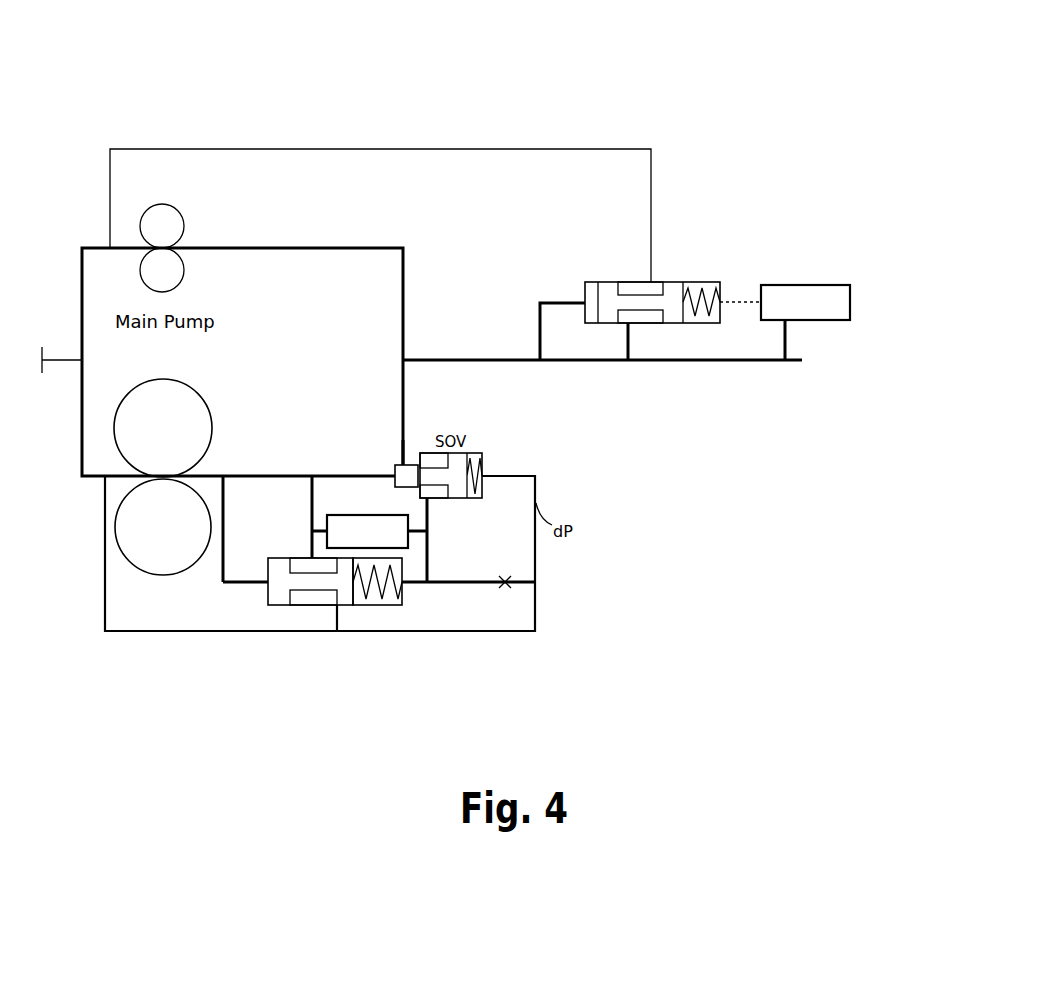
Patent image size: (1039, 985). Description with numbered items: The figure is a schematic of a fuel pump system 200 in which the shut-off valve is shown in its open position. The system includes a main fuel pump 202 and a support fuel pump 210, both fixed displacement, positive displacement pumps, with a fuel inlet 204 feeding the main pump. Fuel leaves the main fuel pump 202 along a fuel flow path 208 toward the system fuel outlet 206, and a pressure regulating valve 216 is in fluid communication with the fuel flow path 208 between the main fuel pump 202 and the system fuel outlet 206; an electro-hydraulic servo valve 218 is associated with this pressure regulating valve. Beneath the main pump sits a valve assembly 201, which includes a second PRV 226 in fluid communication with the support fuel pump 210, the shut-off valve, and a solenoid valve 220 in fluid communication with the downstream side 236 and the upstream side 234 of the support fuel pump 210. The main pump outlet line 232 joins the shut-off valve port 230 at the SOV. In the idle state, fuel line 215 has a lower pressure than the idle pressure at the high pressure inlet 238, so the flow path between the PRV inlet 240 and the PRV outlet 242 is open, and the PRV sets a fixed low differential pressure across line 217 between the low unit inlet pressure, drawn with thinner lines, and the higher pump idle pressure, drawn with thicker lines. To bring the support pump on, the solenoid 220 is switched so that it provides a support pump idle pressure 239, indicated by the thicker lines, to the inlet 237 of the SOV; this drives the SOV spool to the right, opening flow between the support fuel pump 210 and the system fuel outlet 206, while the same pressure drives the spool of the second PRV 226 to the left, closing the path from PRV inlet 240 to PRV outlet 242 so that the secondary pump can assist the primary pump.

The fuel pump system 200 is at (112, 97).
The valve assembly 201 is at (524, 461).
The main fuel pump 202 is at (186, 243).
The fuel inlet 204 is at (64, 346).
The system fuel outlet 206 is at (795, 367).
The fuel flow path 208 is at (465, 358).
The support fuel pump 210 is at (193, 476).
The fuel line 215 is at (502, 578).
The pressure regulating valve 216 is at (612, 282).
The differential pressure line 217 is at (506, 590).
The electro-hydraulic servo valve 218 is at (793, 284).
The solenoid valve 220 is at (362, 514).
The second PRV 226 is at (278, 608).
The shutoff valve port 230 is at (394, 466).
The main pump outlet line 232 is at (398, 463).
The upstream side of the support fuel pump 234 is at (93, 478).
The downstream side of the support fuel pump 236 is at (280, 476).
The inlet of the SOV 237 is at (428, 499).
The high pressure inlet 238 is at (268, 586).
The support pump idle pressure 239 is at (448, 585).
The PRV inlet 240 is at (337, 607).
The PRV outlet 242 is at (307, 556).